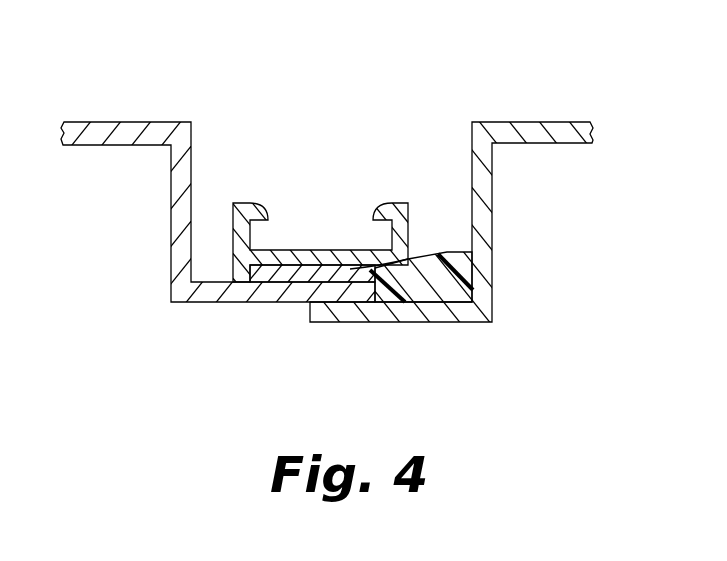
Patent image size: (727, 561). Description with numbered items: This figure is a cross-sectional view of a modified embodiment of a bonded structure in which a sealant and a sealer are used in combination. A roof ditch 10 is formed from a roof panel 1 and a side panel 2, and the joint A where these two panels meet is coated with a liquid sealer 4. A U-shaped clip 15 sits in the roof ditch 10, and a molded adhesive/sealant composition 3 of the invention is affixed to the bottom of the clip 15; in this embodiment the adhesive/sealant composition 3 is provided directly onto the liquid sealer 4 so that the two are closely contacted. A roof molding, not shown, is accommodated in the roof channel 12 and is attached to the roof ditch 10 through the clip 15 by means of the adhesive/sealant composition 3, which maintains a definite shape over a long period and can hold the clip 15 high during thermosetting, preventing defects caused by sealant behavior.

The roof ditch 10 is at (363, 197).
The roof panel 1 is at (178, 238).
The side panel 2 is at (490, 233).
The roof channel 12 is at (322, 173).
The clip 15 is at (250, 233).
The adhesive/sealant composition 3 is at (283, 276).
The liquid sealer 4 is at (458, 290).
The joint A is at (378, 322).